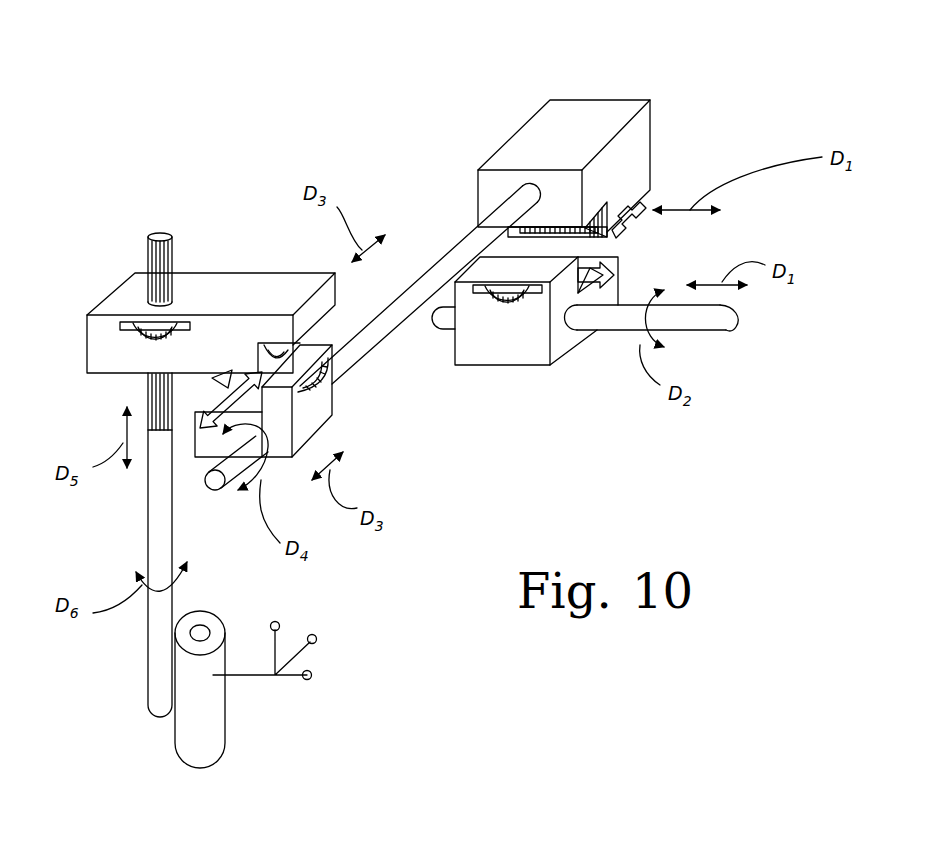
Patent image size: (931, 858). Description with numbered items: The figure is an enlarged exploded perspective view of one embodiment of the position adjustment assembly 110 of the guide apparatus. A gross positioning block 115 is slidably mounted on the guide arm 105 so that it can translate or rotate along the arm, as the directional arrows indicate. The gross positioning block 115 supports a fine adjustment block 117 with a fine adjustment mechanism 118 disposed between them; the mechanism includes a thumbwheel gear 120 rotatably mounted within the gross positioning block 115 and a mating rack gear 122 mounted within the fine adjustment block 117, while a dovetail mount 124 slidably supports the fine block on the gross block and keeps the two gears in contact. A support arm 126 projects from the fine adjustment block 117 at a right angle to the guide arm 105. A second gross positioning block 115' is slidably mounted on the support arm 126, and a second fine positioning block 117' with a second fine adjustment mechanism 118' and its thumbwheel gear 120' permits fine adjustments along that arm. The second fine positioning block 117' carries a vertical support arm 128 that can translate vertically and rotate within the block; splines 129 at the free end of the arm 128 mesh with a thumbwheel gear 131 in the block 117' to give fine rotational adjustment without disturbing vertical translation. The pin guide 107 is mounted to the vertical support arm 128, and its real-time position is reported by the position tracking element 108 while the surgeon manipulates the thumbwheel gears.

The position adjustment assembly 110 is at (428, 145).
The fine adjustment block 117 is at (603, 166).
The rack gear 122 is at (660, 208).
The dovetail mount 124 is at (632, 228).
The fine adjustment mechanism 118 is at (657, 268).
The guide arm 105 is at (700, 318).
The gross positioning block 115 is at (514, 347).
The thumbwheel gear 120 is at (549, 356).
The support arm 126 is at (429, 268).
The second fine positioning block 117' is at (211, 288).
The splines 129 is at (147, 250).
The thumbwheel gear 131 is at (132, 332).
The second fine adjustment mechanism 118' is at (141, 399).
The thumbwheel gear 120' is at (350, 370).
The second gross positioning block 115' is at (318, 420).
The vertical support arm 128 is at (157, 523).
The pin guide 107 is at (200, 743).
The position tracking element 108 is at (257, 677).